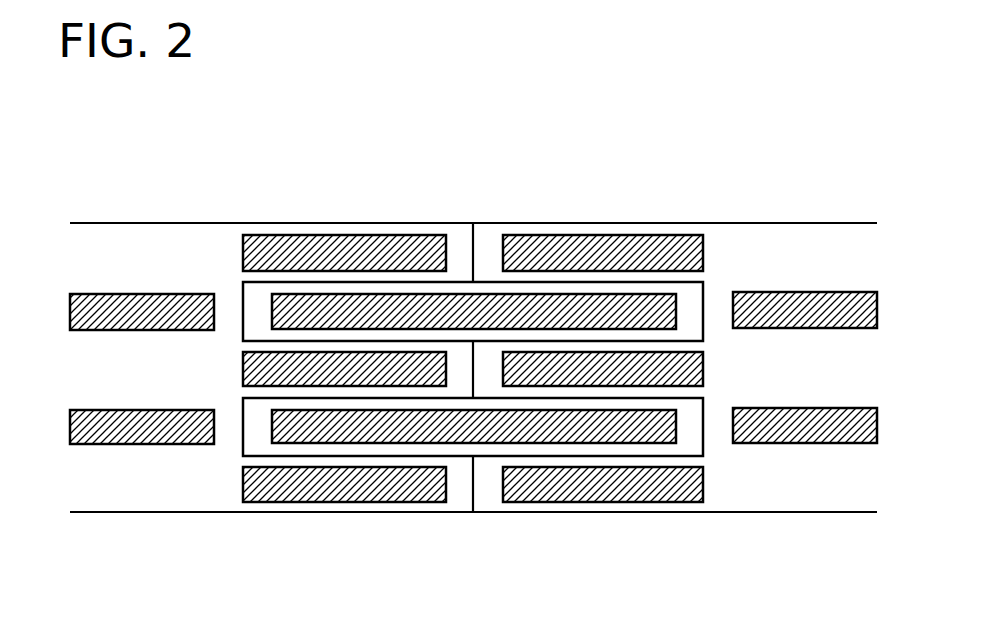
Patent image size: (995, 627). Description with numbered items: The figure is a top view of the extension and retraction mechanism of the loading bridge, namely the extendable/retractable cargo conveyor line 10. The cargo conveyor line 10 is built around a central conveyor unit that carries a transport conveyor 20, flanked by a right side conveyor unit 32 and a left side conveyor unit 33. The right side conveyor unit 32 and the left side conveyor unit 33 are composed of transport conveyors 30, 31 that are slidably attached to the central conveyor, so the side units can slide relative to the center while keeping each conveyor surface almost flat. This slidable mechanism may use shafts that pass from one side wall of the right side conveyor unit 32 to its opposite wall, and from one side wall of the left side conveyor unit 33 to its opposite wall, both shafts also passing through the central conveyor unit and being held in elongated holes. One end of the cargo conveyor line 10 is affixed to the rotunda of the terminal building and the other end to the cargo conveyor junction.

The cargo conveyor line 10 is at (748, 220).
The transport conveyor 20 is at (455, 300).
The transport conveyor 30 is at (690, 409).
The transport conveyor 31 is at (258, 373).
The right side conveyor unit 32 is at (808, 500).
The left side conveyor unit 33 is at (172, 503).